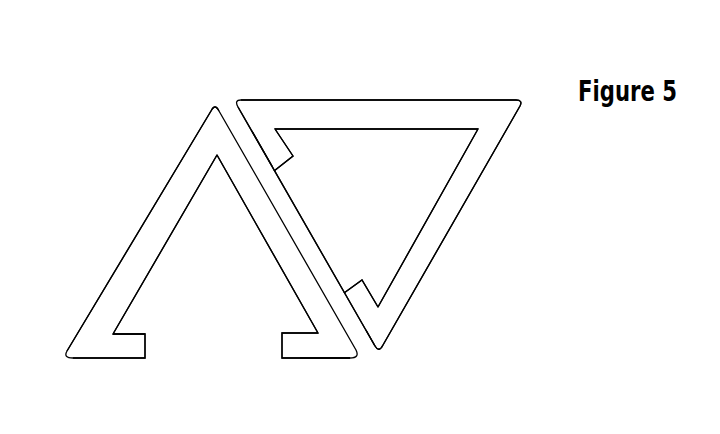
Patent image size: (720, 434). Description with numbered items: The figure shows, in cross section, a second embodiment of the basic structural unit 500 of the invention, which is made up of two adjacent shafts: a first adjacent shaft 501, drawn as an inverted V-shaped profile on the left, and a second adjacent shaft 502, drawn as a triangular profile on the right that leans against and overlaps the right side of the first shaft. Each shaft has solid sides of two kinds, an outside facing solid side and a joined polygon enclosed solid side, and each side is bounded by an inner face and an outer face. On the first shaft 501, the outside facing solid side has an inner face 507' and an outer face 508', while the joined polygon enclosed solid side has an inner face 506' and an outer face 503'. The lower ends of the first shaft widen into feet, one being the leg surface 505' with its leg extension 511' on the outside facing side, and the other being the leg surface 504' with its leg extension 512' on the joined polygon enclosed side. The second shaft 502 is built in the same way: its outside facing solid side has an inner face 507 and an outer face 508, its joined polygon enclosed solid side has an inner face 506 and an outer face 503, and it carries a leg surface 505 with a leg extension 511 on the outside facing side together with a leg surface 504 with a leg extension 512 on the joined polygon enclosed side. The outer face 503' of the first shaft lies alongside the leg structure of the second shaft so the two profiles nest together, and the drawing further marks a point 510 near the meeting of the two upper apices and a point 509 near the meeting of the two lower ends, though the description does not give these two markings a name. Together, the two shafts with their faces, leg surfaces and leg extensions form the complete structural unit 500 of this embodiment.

The basic structural unit 500 is at (532, 193).
The first adjacent shaft 501 is at (160, 152).
The second adjacent shaft 502 is at (437, 82).
The outer face of a joined polygon enclosed solid side 503 is at (466, 225).
The outer face of a joined polygon enclosed solid side 503' is at (306, 226).
The leg surface of a joined polygon enclosed solid side 504 is at (430, 335).
The leg surface of a joined polygon enclosed solid side 504' is at (321, 393).
The leg surface of an outside facing solid side 505 is at (273, 113).
The leg surface of an outside facing solid side 505' is at (109, 380).
The inner face of a joined polygon enclosed solid side 506 is at (428, 218).
The inner face of a joined polygon enclosed solid side 506' is at (267, 244).
The inner face of an outside facing solid side 507 is at (376, 153).
The inner face of an outside facing solid side 507' is at (165, 244).
The outer face of an outside facing solid side 508 is at (381, 76).
The outer face of an outside facing solid side 508' is at (133, 231).
The contact point 509 is at (367, 353).
The apex of first clip member 510 is at (227, 101).
The leg extension of an outside facing solid side 511 is at (296, 86).
The leg extension of an outside facing solid side 511' is at (82, 314).
The leg extension of a joined polygon enclosed solid side 512 is at (442, 292).
The leg extension of a joined polygon enclosed solid side 512' is at (266, 379).